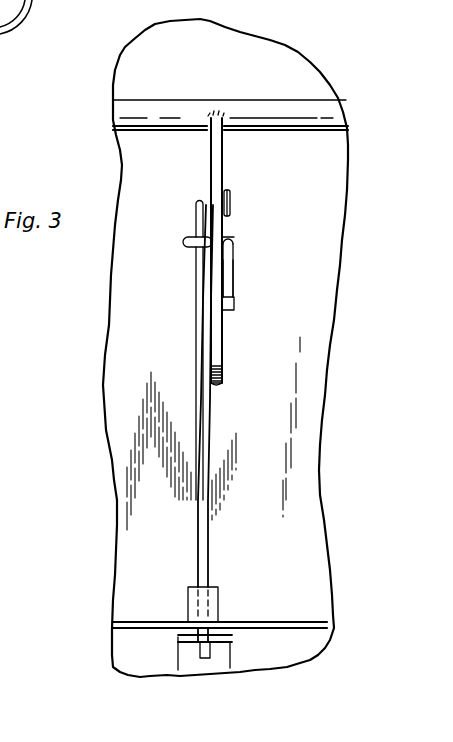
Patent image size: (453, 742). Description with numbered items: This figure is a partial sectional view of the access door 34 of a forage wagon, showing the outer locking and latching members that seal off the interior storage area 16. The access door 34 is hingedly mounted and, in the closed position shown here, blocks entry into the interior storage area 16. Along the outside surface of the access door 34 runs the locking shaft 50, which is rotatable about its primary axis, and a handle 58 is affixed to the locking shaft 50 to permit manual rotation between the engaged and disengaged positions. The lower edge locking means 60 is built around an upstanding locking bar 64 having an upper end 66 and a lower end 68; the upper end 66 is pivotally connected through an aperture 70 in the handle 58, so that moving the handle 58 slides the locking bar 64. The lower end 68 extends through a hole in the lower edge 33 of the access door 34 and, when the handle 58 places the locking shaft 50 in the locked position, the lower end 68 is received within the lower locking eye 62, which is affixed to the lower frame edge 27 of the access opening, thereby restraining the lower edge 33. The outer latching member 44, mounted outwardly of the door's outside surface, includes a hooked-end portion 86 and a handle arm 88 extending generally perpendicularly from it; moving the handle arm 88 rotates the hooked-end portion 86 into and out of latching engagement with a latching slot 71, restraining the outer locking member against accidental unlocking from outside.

The interior storage area 16 is at (234, 243).
The lower frame edge 27 is at (221, 645).
The lower edge 33 is at (297, 620).
The access door 34 is at (164, 350).
The outer latching member 44 is at (240, 259).
The locking shaft 50 is at (157, 108).
The handle 58 is at (222, 148).
The lower edge locking means 60 is at (188, 565).
The lower locking eye 62 is at (177, 637).
The locking bar 64 is at (204, 413).
The upper end 66 is at (203, 198).
The lower end 68 is at (200, 652).
The aperture 70 is at (230, 196).
The latching slot 71 is at (212, 254).
The hooked-end portion 86 is at (233, 231).
The handle arm 88 is at (235, 303).